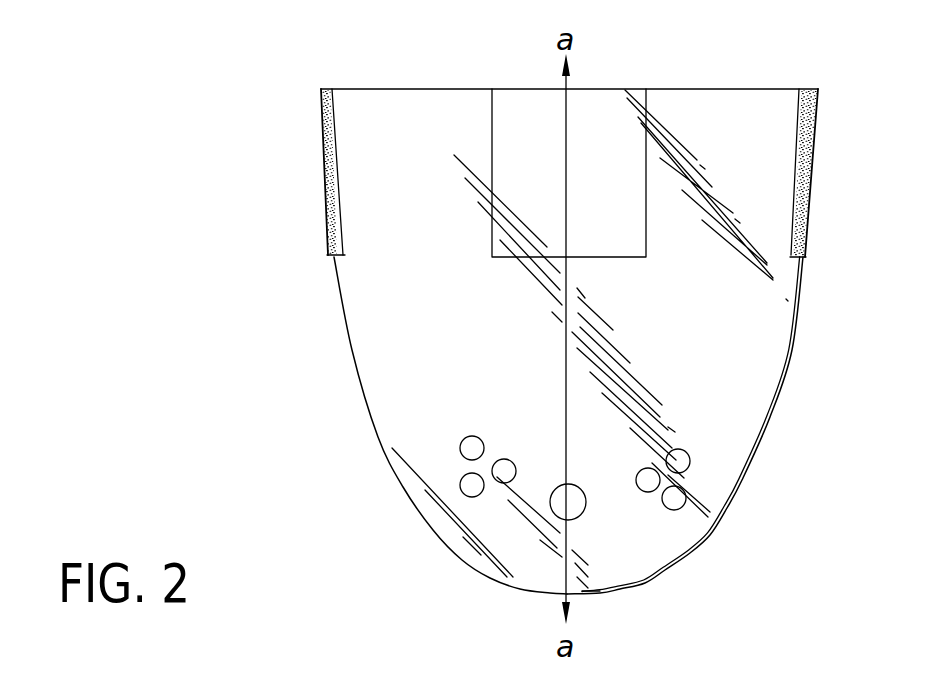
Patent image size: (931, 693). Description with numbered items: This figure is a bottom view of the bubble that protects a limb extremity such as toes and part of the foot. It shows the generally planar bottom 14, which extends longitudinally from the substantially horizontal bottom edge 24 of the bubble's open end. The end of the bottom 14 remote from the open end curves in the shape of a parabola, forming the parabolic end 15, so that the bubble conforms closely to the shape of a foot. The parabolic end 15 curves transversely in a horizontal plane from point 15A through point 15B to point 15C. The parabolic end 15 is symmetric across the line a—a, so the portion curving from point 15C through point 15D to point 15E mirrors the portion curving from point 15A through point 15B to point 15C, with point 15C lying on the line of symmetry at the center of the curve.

The bottom 14 is at (720, 105).
The bottom edge 24 is at (393, 89).
The parabolic end 15 is at (628, 527).
The parabolic end point 15A is at (755, 458).
The parabolic end point 15B is at (702, 545).
The parabolic end point 15C is at (577, 593).
The parabolic end point 15D is at (445, 547).
The parabolic end point 15E is at (378, 440).